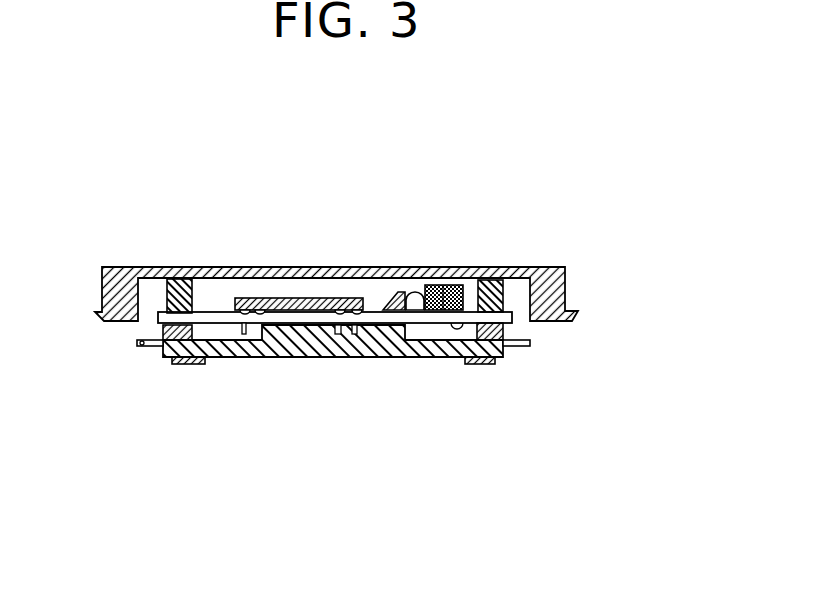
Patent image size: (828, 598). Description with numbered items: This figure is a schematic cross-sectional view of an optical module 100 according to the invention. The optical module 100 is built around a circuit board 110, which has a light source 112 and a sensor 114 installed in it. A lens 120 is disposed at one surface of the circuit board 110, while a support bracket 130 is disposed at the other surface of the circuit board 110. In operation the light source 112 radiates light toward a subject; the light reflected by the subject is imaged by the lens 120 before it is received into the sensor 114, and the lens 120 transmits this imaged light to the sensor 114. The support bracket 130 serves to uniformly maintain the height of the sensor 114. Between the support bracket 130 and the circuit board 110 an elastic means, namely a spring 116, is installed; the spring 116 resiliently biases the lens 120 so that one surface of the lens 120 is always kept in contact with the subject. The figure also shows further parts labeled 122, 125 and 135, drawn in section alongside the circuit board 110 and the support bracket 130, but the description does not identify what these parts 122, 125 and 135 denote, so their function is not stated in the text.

The optical module 100 is at (622, 280).
The circuit board 110 is at (505, 317).
The light source 112 is at (410, 294).
The sensor 114 is at (302, 298).
The spring 116 is at (168, 291).
The lens 120 is at (236, 357).
The terminal 122 is at (489, 364).
The lead 125 is at (140, 343).
The support bracket 130 is at (503, 281).
The housing 135 is at (578, 316).